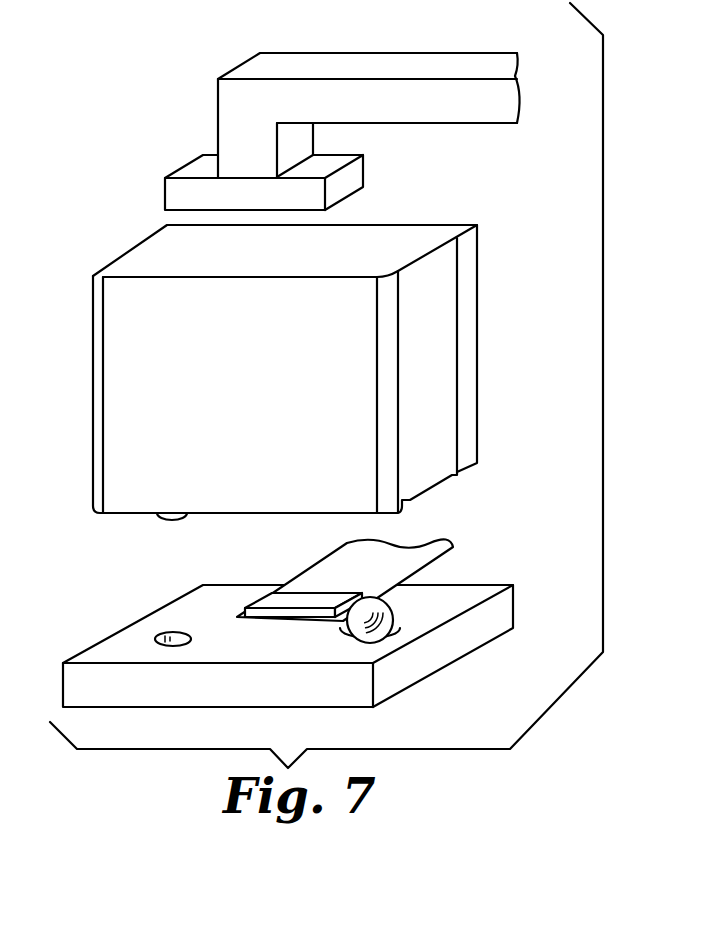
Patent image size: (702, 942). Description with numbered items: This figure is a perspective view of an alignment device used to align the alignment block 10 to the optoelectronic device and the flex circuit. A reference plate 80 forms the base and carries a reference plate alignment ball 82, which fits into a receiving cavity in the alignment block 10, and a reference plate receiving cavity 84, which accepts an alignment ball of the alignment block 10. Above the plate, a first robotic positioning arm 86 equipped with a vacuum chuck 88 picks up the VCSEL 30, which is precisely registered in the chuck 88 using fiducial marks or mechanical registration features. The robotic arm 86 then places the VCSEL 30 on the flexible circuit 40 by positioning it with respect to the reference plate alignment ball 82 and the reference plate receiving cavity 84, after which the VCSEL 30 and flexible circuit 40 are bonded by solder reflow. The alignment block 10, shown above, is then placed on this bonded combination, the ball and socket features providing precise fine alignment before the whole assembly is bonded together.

The alignment block 10 is at (120, 259).
The VCSEL 30 is at (267, 600).
The flexible circuit 40 is at (420, 557).
The reference plate 80 is at (502, 610).
The reference plate alignment ball 82 is at (393, 613).
The reference plate receiving cavity 84 is at (173, 632).
The first robotic positioning arm 86 is at (405, 63).
The vacuum chuck 88 is at (190, 168).